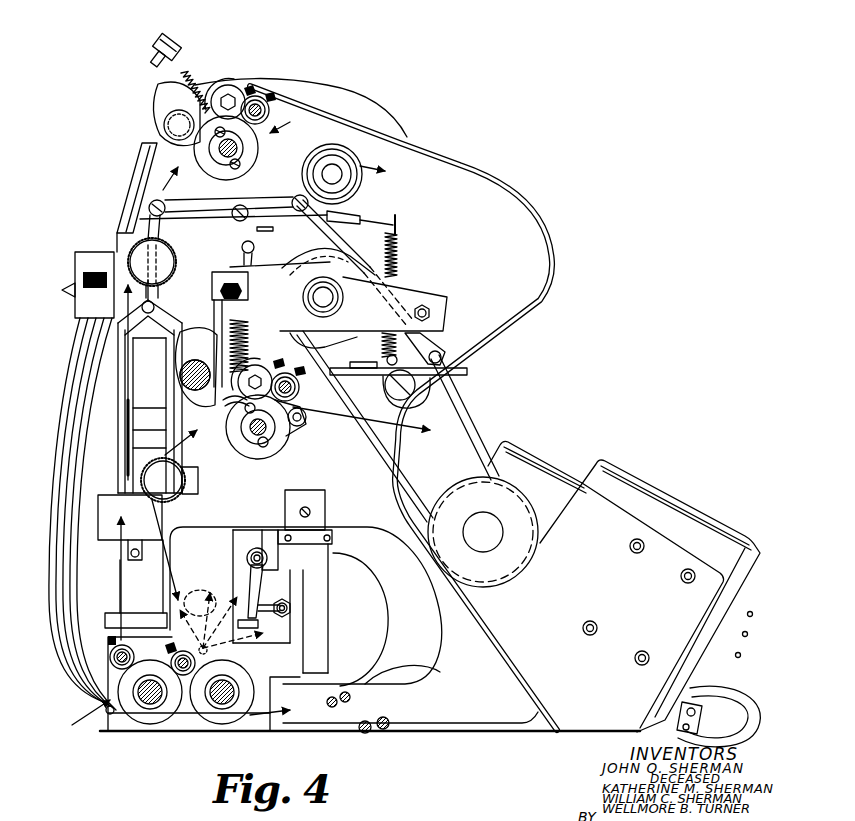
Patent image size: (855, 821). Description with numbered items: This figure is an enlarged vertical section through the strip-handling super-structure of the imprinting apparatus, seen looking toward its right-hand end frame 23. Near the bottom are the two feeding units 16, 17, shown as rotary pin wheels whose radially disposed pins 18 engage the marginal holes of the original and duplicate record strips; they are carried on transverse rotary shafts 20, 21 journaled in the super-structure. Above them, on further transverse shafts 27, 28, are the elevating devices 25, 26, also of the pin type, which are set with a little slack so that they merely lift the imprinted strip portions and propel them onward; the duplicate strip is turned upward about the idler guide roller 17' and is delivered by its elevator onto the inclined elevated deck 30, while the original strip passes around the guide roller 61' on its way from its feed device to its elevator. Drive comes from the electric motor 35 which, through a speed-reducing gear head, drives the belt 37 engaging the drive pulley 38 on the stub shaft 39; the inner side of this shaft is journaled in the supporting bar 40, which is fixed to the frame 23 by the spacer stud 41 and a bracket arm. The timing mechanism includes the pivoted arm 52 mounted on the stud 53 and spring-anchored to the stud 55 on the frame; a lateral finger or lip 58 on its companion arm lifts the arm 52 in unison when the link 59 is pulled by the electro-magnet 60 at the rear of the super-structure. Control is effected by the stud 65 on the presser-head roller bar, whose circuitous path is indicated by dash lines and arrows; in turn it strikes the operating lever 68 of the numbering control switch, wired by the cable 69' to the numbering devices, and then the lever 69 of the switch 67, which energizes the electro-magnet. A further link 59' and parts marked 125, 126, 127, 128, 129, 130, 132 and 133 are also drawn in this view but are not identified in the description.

The feeding unit 16 is at (135, 713).
The feeding unit 17 is at (236, 750).
The idler guide roller 17' is at (179, 489).
The radially disposed pins 18 is at (206, 150).
The transverse rotary shaft 20 is at (150, 703).
The transverse rotary shaft 21 is at (220, 703).
The end frame 23 is at (485, 175).
The elevating device 25 is at (253, 163).
The elevating device 26 is at (252, 460).
The transverse rotary shaft 27 is at (218, 173).
The transverse rotary shaft 28 is at (281, 448).
The inclined elevated deck 30 is at (537, 473).
The electric motor 35 is at (653, 500).
The belt 37 is at (467, 420).
The drive pulley 38 is at (343, 255).
The stub shaft 39 is at (327, 297).
The supporting bar 40 is at (437, 308).
The spacer stud 41 is at (243, 267).
The pivoted arm 52 is at (297, 218).
The stud 53 is at (240, 221).
The stud 55 is at (390, 362).
The lateral finger or lip 58 is at (273, 207).
The link 59 is at (180, 212).
The link rod 59' is at (281, 207).
The electro-magnet 60 is at (148, 363).
The guide roller 61' is at (106, 230).
The stud 65 is at (221, 622).
The electric switch 67 is at (248, 538).
The operating lever 68 is at (258, 577).
The operating lever 69 is at (306, 602).
The cable 69' is at (306, 606).
The roller 125 is at (167, 122).
The housing 126 is at (175, 87).
The bracket 127 is at (222, 88).
The hub 128 is at (253, 147).
The screw 129 is at (157, 43).
The gear 130 is at (233, 90).
The roller 132 is at (262, 98).
The guide 133 is at (182, 700).